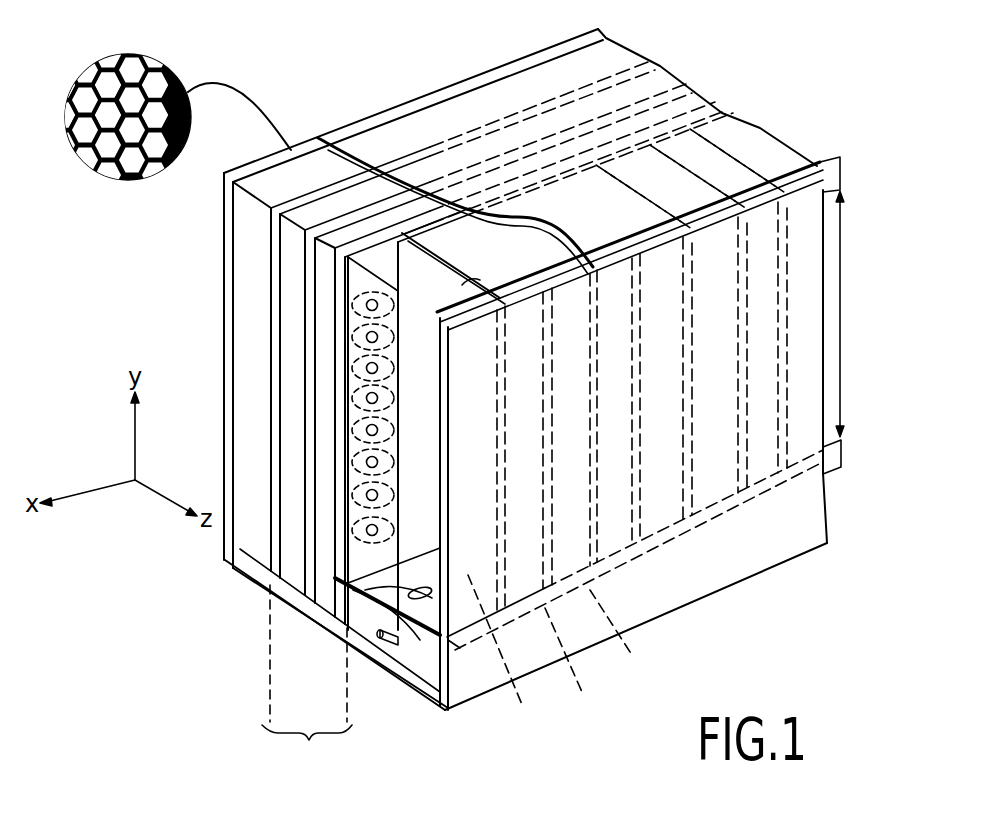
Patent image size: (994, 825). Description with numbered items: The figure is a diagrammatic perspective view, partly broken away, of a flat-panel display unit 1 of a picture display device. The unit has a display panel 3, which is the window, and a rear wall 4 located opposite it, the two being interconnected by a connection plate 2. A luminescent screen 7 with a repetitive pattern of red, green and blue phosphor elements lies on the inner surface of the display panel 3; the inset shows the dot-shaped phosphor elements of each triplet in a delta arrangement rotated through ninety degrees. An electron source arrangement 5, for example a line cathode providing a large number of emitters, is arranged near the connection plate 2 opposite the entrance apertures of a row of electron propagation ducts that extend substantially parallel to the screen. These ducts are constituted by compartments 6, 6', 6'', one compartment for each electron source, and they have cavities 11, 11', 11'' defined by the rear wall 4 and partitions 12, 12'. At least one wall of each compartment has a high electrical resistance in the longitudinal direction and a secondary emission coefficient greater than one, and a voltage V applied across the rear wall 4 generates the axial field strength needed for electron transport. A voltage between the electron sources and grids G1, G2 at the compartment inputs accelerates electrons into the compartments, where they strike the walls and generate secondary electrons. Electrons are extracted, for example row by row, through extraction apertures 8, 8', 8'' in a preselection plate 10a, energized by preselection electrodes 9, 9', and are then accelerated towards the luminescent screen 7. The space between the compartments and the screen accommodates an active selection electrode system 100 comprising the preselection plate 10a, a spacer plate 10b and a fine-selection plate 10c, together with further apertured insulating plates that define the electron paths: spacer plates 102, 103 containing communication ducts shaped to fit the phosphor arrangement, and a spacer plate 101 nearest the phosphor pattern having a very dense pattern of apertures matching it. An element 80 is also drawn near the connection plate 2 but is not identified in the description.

The flat-panel display unit 1 is at (846, 545).
The connection plate 2 is at (316, 628).
The display panel 3 is at (253, 168).
The rear wall 4 is at (765, 445).
The electron source arrangement 5 is at (393, 650).
The compartment 6 is at (506, 652).
The compartment 6' is at (573, 658).
The compartment 6'' is at (629, 631).
The luminescent screen 7 is at (233, 237).
The extraction aperture 8 is at (387, 443).
The extraction aperture 8' is at (390, 346).
The extraction aperture 8'' is at (392, 385).
The preselection electrode 9 is at (416, 320).
The preselection electrode 9' is at (420, 247).
The preselection plate 10a is at (703, 92).
The spacer plate 10b is at (686, 90).
The fine-selection plate 10c is at (652, 70).
The cavity 11 is at (331, 593).
The cavity 11' is at (455, 165).
The cavity 11'' is at (458, 154).
The partition 12 is at (565, 371).
The partition 12' is at (638, 433).
The hole 80 is at (365, 625).
The active selection electrode system 100 is at (307, 680).
The spacer plate 101 is at (252, 300).
The spacer plate 102 is at (290, 530).
The spacer plate 103 is at (253, 574).
The grid G1 is at (413, 640).
The grid G2 is at (458, 640).
The voltage V is at (851, 323).